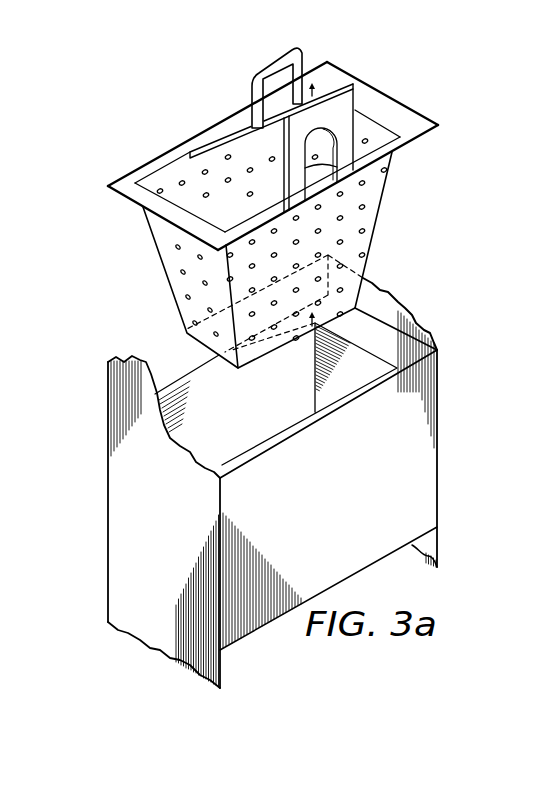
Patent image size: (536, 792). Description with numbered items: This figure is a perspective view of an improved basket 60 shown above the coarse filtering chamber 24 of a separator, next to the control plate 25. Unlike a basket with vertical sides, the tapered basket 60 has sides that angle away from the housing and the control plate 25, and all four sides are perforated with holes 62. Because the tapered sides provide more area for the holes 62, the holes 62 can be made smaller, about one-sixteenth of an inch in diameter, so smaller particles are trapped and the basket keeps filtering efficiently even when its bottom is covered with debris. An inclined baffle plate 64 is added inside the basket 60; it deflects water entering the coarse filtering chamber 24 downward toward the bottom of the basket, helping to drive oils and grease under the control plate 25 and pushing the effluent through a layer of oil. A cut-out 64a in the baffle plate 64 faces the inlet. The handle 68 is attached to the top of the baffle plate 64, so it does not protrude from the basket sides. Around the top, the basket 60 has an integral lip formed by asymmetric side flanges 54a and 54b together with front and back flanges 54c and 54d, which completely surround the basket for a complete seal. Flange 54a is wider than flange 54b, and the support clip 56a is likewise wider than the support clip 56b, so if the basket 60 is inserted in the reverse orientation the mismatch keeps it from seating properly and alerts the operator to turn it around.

The coarse filtering chamber 24 is at (158, 356).
The control plate 25 is at (423, 492).
The support clip 56a is at (383, 340).
The support clip 56b is at (195, 458).
The improved basket 60 is at (100, 144).
The holes 62 is at (372, 224).
The baffle plate 64 is at (360, 97).
The cut-out 64a is at (347, 170).
The handle 68 is at (277, 60).
The flange 54a is at (340, 67).
The flange 54b is at (120, 194).
The front flange 54c is at (390, 140).
The back flange 54d is at (168, 150).